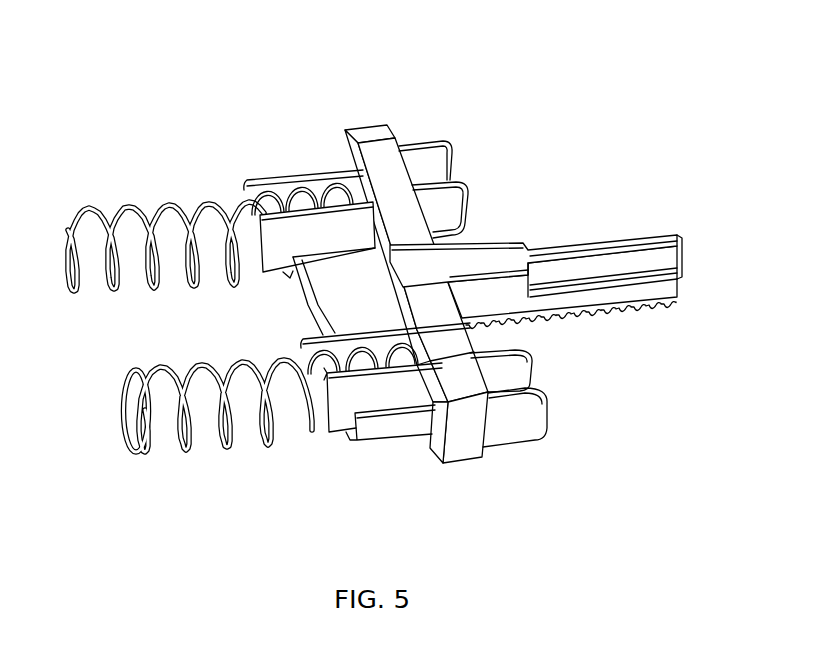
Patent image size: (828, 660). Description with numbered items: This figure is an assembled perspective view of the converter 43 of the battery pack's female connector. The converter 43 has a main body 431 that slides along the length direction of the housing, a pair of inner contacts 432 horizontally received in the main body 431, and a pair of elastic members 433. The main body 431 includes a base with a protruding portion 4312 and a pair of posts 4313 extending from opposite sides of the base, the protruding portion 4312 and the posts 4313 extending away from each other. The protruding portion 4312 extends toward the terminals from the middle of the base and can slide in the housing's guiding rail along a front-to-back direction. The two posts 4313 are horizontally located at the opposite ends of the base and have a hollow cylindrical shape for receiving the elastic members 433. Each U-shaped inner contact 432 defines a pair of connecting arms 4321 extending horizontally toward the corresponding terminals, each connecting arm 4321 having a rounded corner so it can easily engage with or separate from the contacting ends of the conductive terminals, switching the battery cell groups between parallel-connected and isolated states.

The converter 43 is at (247, 118).
The main body 431 is at (372, 138).
The protruding portion 4312 is at (593, 247).
The post 4313 is at (272, 182).
The connecting arm 4321 is at (447, 147).
The inner contact 432 is at (520, 430).
The elastic member 433 is at (150, 442).